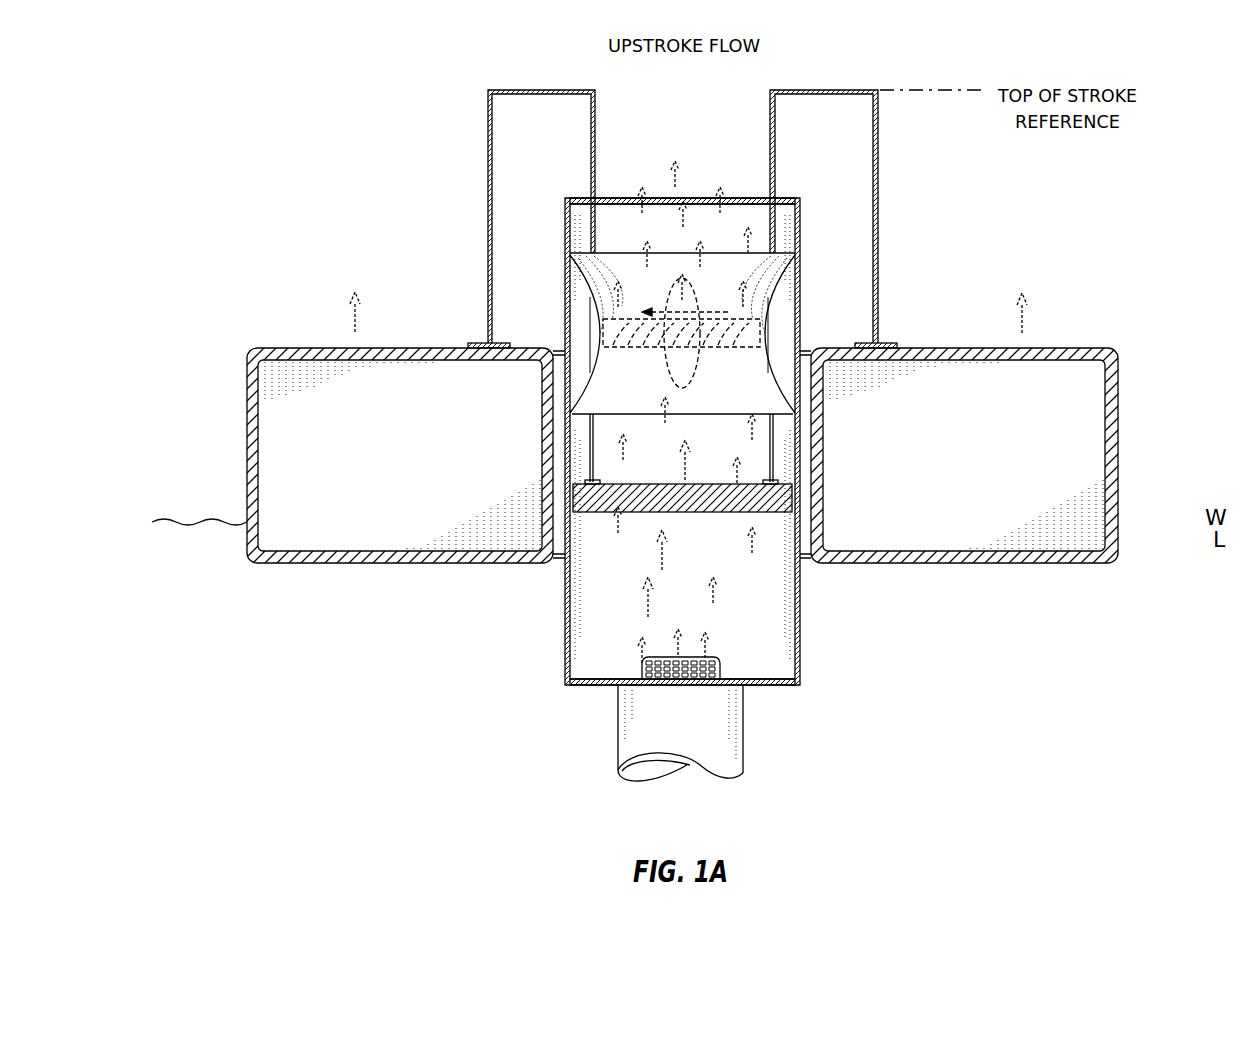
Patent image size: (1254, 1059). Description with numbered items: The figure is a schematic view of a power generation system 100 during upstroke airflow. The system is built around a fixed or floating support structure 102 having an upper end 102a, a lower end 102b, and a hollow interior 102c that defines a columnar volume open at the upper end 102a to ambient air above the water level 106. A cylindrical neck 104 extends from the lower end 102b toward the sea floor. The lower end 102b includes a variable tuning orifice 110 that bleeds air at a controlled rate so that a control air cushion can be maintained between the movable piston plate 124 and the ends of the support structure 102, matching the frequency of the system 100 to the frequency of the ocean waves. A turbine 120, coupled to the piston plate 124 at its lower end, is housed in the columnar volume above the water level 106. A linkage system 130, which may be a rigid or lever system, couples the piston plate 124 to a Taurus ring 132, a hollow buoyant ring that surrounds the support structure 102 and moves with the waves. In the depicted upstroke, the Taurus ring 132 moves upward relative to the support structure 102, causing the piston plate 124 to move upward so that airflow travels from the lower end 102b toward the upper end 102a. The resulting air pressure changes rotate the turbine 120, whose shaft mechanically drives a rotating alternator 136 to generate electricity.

The power generation system 100 is at (183, 105).
The support structure 102 is at (563, 623).
The upper end 102a is at (790, 200).
The lower end 102b is at (790, 688).
The hollow interior 102c is at (640, 578).
The cylindrical neck 104 is at (618, 742).
The water level 106 is at (1195, 525).
The variable tuning orifice 110 is at (720, 668).
The turbine 120 is at (647, 403).
The movable piston plate 124 is at (658, 513).
The linkage system 130 is at (878, 217).
The Taurus ring 132 is at (1010, 565).
The rotating alternator 136 is at (710, 335).